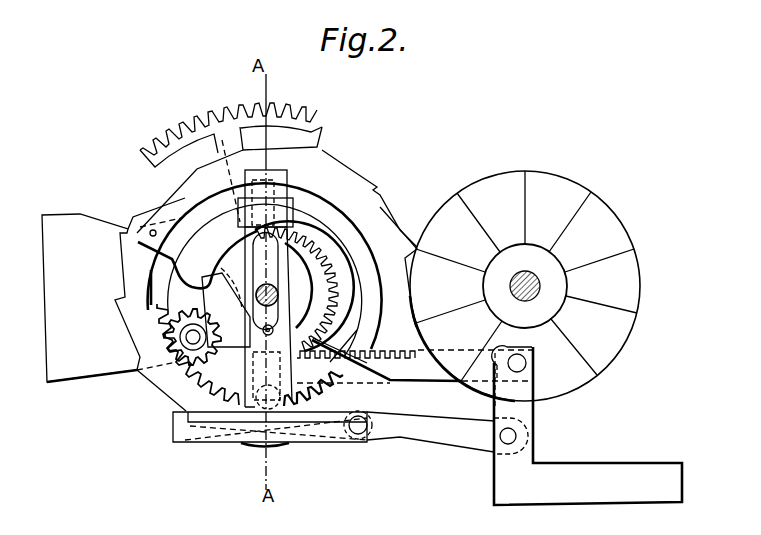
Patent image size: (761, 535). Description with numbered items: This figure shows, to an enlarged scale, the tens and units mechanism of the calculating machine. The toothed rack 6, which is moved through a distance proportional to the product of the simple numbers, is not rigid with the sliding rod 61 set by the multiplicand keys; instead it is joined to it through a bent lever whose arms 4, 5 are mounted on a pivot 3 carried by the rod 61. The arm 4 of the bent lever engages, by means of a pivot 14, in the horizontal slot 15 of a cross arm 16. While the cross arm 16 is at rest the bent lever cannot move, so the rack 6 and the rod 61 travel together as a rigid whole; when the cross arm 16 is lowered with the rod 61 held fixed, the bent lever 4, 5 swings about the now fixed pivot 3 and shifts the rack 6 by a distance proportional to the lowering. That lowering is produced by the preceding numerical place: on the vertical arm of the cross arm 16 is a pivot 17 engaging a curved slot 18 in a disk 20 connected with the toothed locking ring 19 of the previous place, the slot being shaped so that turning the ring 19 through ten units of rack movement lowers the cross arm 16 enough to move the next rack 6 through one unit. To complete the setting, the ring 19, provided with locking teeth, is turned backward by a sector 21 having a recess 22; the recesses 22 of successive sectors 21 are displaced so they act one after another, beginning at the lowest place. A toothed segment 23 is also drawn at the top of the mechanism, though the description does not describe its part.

The pivot 3 is at (520, 436).
The arm of bent lever 4 is at (447, 441).
The arm of bent lever 5 is at (523, 395).
The toothed rack 6 is at (441, 377).
The sliding rod 61 is at (604, 483).
The pivot 14 is at (358, 436).
The horizontal slot 15 is at (277, 425).
The cross arm 16 is at (247, 370).
The pivot 17 is at (268, 332).
The curved slot 18 is at (212, 240).
The toothed locking ring 19 is at (333, 183).
The disk 20 is at (315, 227).
The sector 21 is at (452, 213).
The recess 22 is at (450, 283).
The toothed segment 23 is at (230, 137).